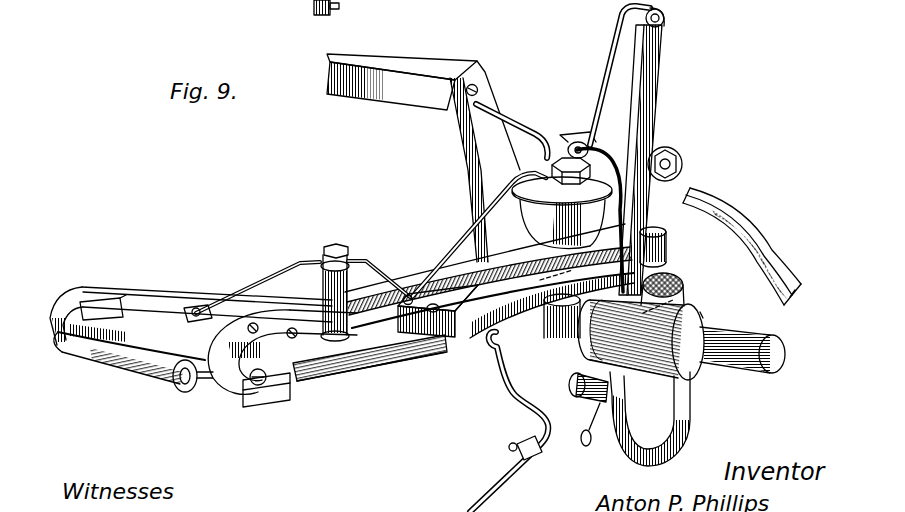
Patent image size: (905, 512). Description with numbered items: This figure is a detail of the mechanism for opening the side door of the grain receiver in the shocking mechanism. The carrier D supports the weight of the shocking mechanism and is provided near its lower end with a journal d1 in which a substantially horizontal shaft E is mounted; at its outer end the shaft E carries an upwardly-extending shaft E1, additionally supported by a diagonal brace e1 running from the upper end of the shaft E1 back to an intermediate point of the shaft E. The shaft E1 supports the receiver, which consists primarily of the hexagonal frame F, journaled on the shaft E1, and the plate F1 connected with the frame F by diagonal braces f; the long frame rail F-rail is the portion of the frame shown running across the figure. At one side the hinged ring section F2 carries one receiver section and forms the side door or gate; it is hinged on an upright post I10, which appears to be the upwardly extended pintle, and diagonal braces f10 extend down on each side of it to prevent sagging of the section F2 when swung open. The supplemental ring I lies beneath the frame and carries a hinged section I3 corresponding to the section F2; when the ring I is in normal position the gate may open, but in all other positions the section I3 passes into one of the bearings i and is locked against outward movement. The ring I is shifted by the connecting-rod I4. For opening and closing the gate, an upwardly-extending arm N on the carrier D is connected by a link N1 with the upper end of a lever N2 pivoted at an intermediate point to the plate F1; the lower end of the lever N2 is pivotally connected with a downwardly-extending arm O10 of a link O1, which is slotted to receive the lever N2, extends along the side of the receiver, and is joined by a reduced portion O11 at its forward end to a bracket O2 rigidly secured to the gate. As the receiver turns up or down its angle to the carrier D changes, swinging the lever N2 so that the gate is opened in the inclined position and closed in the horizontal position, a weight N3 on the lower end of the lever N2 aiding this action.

The hexagonal frame F is at (438, 64).
The frame rail F-rail is at (504, 258).
The plate F1 is at (562, 138).
The hinged ring section F2 is at (190, 294).
The diagonal braces f is at (508, 118).
The diagonal braces f10 is at (282, 282).
The supplemental ring I is at (140, 375).
The hinged section I3 is at (373, 372).
The connecting-rod I4 is at (482, 510).
The post I10 is at (320, 292).
The bearings i is at (181, 392).
The link O1 is at (463, 343).
The bracket O2 is at (238, 390).
The reduced portion O11 is at (336, 382).
The downwardly-extending arm O10 is at (592, 373).
The upwardly-extending arm N is at (620, 217).
The link N1 is at (600, 105).
The lever N2 is at (663, 100).
The weight N3 is at (696, 425).
The shaft E is at (786, 346).
The upwardly-extending shaft E1 is at (562, 203).
The diagonal brace e1 is at (712, 194).
The carrier D is at (679, 277).
The journal d1 is at (699, 308).